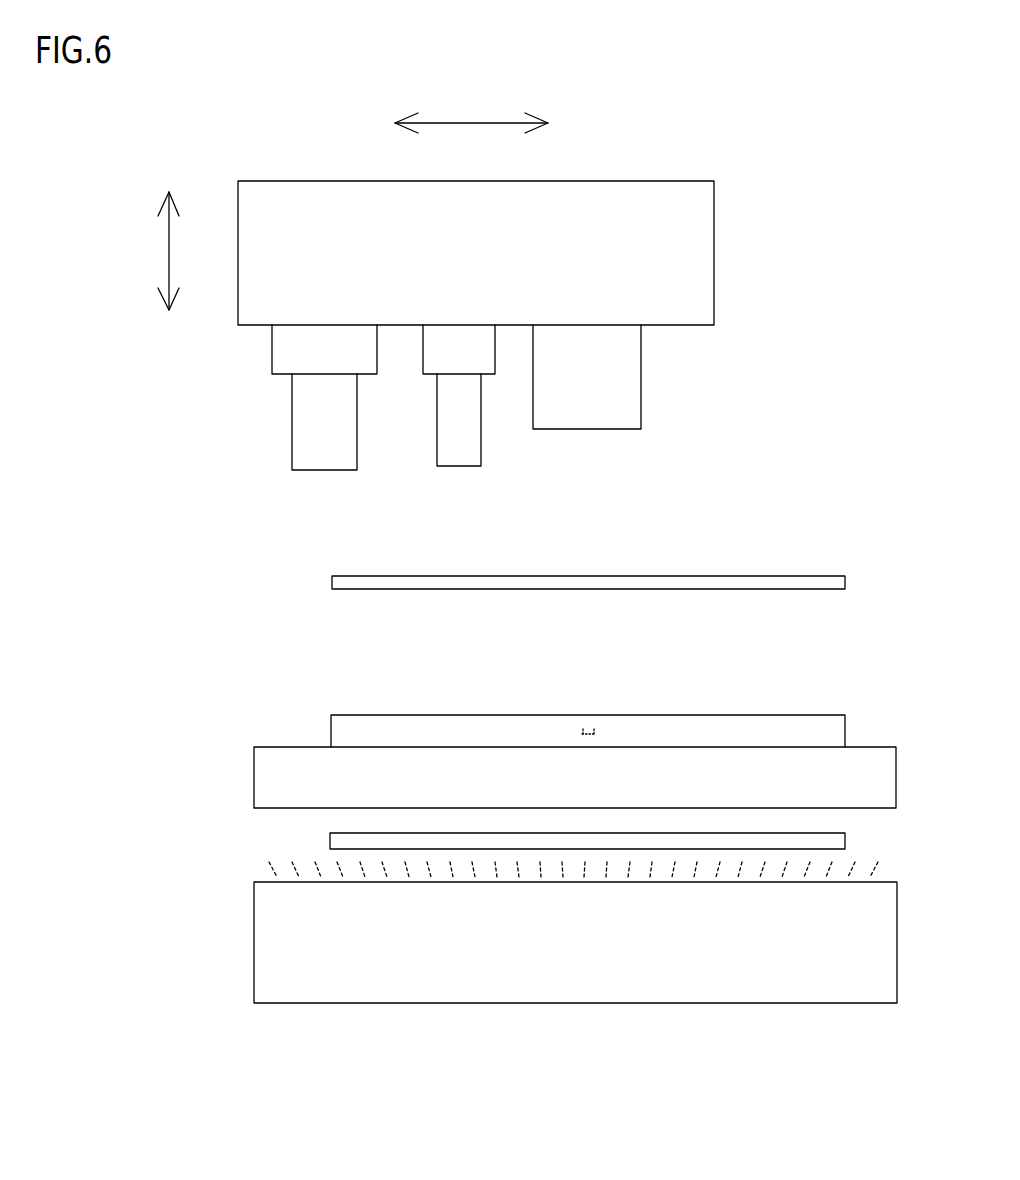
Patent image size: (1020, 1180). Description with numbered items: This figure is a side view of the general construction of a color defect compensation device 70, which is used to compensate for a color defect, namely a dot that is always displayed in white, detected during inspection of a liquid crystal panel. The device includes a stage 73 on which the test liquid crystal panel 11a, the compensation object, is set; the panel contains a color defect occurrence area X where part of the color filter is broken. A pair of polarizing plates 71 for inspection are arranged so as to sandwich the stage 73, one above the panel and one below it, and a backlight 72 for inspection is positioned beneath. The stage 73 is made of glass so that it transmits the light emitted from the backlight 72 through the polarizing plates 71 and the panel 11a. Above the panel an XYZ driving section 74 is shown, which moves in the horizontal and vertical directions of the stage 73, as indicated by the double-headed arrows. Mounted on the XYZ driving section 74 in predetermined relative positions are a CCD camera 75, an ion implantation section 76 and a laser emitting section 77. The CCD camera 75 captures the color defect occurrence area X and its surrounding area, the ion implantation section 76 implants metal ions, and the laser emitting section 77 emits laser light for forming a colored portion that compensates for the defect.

The color defect compensation device 70 is at (186, 680).
The polarizing plates for inspection 71 is at (820, 581).
The backlight for inspection 72 is at (369, 980).
The stage 73 is at (265, 766).
The XYZ driving section 74 is at (626, 208).
The CCD camera 75 is at (626, 385).
The ion implantation section 76 is at (447, 436).
The laser emitting section 77 is at (307, 422).
The test liquid crystal panel 11a is at (823, 725).
The color defect occurrence area X is at (587, 727).